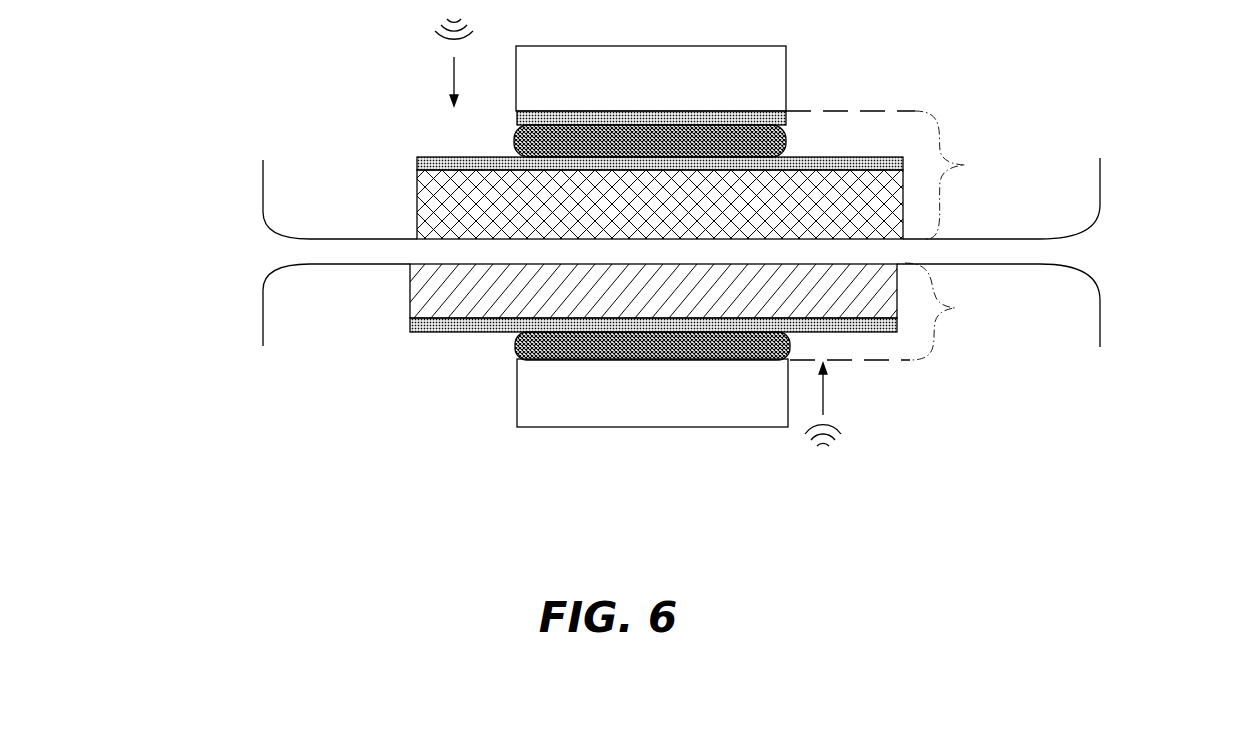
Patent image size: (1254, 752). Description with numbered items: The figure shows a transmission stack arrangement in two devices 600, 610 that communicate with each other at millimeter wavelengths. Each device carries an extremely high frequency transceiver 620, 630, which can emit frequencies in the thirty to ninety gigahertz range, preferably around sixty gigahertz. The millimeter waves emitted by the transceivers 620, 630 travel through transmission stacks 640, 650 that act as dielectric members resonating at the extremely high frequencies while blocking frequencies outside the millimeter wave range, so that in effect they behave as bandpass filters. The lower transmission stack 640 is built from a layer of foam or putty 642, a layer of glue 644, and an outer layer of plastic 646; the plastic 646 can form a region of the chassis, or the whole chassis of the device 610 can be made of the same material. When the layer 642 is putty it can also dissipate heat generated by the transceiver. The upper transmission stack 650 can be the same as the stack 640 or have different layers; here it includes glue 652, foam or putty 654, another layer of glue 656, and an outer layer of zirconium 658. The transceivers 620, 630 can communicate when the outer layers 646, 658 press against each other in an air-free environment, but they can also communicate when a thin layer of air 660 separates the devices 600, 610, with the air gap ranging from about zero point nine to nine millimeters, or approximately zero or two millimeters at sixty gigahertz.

The device 600 is at (1100, 188).
The device 610 is at (1101, 310).
The transceiver 620 is at (651, 78).
The transceiver 630 is at (652, 393).
The transmission stack 640 is at (955, 316).
The foam or putty layer 642 is at (503, 348).
The glue layer 644 is at (398, 326).
The plastic layer 646 is at (398, 278).
The transmission stack 650 is at (972, 172).
The glue layer 652 is at (510, 120).
The foam or putty layer 654 is at (500, 137).
The glue layer 656 is at (405, 160).
The zirconium layer 658 is at (424, 202).
The thin layer of air 660 is at (950, 256).